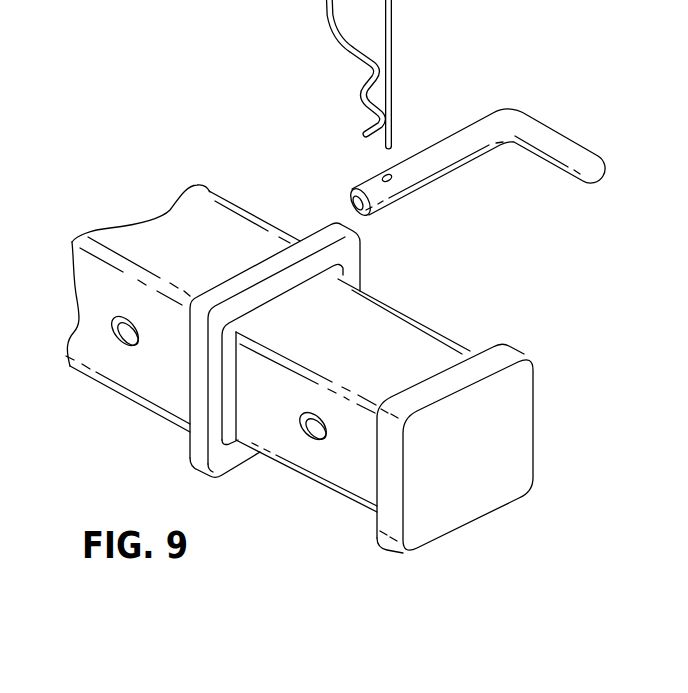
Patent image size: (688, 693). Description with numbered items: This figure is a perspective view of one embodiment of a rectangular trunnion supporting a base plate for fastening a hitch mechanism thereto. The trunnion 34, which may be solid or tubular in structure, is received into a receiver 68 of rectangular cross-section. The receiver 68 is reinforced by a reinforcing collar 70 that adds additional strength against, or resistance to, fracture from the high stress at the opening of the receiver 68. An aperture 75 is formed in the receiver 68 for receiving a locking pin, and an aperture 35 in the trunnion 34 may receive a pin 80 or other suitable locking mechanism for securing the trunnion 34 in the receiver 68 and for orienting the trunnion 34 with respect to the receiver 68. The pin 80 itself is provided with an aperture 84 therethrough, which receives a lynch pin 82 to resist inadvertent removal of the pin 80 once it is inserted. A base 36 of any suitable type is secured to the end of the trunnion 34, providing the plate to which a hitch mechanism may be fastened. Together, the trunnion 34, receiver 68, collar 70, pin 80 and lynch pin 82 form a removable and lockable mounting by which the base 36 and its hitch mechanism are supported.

The trunnion 34 is at (403, 335).
The aperture 35 is at (307, 442).
The base 36 is at (520, 438).
The receiver 68 is at (202, 210).
The reinforcing collar 70 is at (197, 437).
The aperture 75 is at (118, 345).
The pin 80 is at (570, 160).
The lynch pin 82 is at (395, 40).
The aperture 84 is at (394, 181).